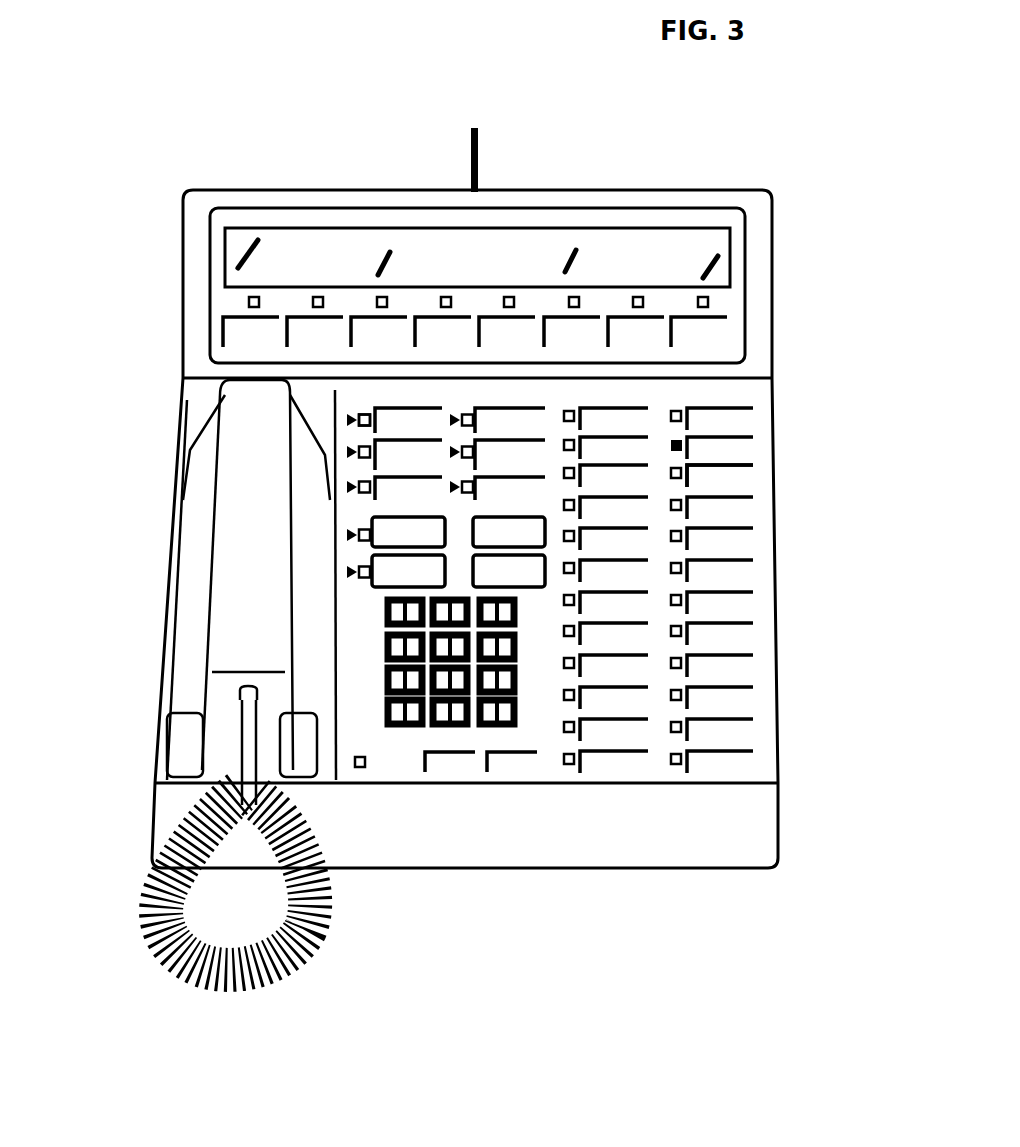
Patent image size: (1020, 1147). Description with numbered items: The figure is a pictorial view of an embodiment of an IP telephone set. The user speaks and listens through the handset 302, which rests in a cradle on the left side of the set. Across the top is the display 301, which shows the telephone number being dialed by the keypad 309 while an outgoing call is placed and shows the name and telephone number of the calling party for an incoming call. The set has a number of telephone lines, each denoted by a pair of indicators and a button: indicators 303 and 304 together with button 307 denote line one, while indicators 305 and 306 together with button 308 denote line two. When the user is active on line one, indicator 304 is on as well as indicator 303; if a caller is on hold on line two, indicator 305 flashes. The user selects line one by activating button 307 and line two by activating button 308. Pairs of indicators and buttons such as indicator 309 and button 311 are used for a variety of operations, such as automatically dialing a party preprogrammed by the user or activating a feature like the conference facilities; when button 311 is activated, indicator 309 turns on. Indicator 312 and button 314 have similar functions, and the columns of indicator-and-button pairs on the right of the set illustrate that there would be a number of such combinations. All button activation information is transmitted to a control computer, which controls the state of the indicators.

The display 301 is at (677, 253).
The handset 302 is at (232, 588).
The indicator 303 is at (347, 420).
The indicator 304 is at (352, 416).
The indicator 305 is at (347, 453).
The indicator 306 is at (347, 488).
The button 307 is at (430, 418).
The button 308 is at (390, 462).
The keypad / indicator 309 is at (410, 730).
The button 311 is at (707, 418).
The indicator 312 is at (703, 447).
The button 314 is at (710, 457).